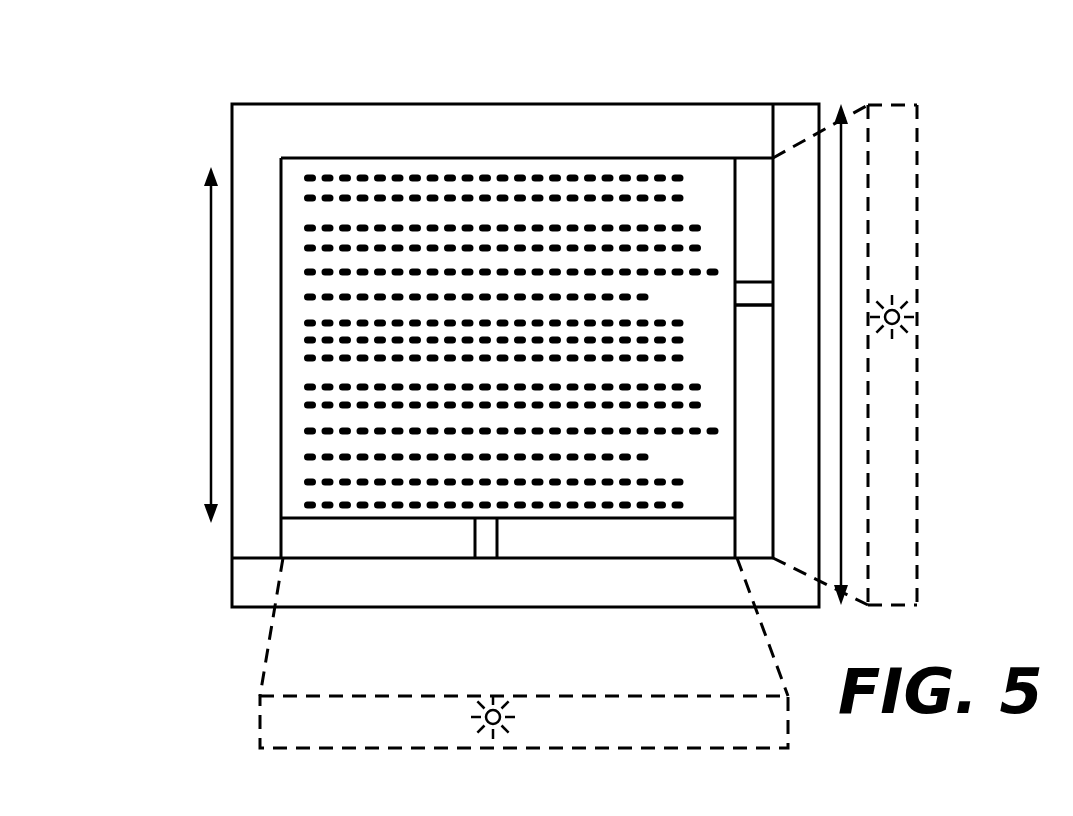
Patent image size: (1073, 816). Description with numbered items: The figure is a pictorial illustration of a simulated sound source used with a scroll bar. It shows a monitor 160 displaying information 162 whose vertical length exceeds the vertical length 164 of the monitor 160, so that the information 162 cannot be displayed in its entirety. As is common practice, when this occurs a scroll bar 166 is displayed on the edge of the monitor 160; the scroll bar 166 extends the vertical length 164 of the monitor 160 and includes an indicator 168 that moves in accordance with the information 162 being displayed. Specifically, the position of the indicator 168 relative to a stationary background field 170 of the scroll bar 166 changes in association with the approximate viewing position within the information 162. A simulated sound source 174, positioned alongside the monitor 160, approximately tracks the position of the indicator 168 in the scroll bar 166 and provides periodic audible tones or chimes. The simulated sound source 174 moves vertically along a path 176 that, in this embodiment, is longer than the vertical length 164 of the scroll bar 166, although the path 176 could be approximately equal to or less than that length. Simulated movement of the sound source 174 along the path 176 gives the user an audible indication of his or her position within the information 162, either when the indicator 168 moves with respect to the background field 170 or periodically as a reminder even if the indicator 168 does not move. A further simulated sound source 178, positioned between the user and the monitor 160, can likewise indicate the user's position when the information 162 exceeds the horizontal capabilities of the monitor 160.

The monitor 160 is at (559, 424).
The information 162 is at (282, 460).
The vertical length 164 is at (211, 322).
The scroll bar 166 is at (746, 122).
The indicator 168 is at (755, 305).
The stationary background field 170 is at (757, 217).
The simulated sound source 174 is at (898, 325).
The path 176 is at (841, 233).
The simulated sound source 178 is at (488, 728).